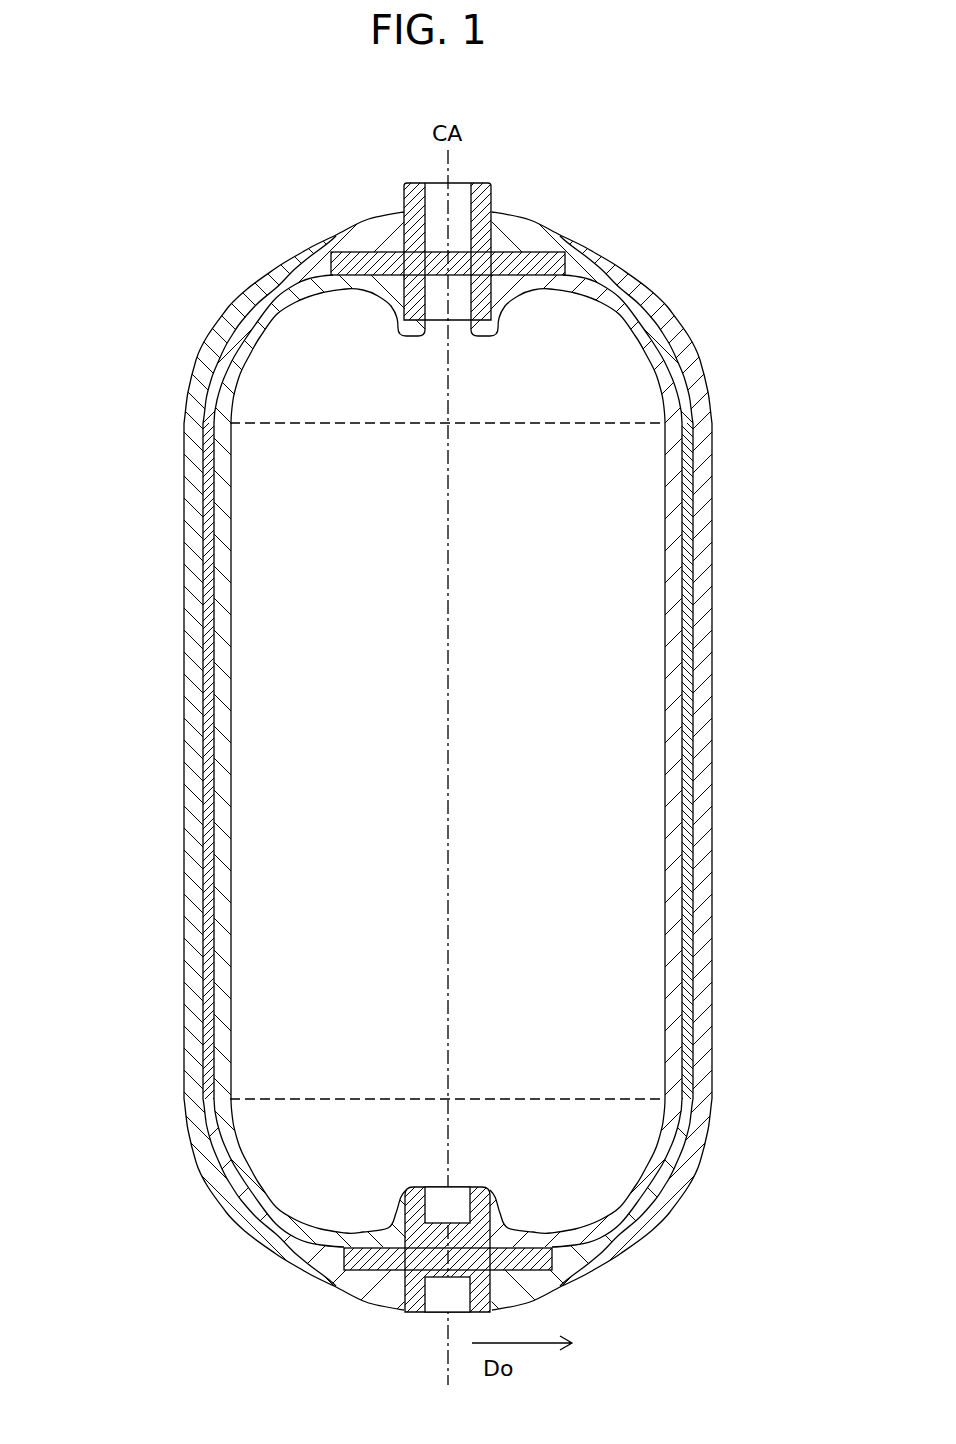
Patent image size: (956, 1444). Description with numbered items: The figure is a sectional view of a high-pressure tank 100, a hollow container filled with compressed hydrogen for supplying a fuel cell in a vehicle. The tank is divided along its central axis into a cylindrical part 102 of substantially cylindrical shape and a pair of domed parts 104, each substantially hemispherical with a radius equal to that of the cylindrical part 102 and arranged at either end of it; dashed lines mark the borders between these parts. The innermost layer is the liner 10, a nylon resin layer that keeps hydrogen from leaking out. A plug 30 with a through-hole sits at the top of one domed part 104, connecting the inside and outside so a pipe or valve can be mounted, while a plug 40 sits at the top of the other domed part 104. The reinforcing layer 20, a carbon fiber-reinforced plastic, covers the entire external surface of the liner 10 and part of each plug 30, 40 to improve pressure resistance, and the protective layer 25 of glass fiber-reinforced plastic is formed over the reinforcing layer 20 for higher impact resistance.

The liner 10 is at (676, 696).
The reinforcing layer 20 is at (690, 732).
The protective layer 25 is at (708, 765).
The plug 30 is at (518, 258).
The plug 40 is at (416, 1313).
The high-pressure tank 100 is at (677, 229).
The cylindrical part 102 is at (151, 774).
The domed part 104 is at (228, 228).